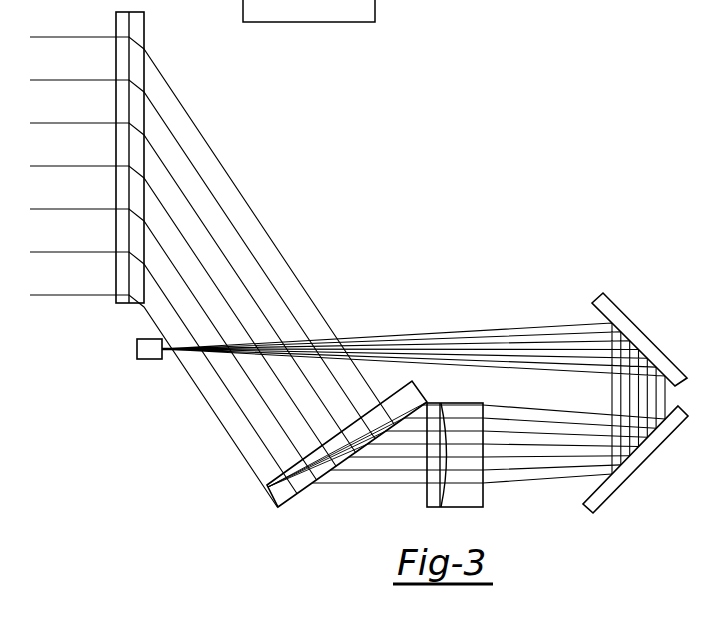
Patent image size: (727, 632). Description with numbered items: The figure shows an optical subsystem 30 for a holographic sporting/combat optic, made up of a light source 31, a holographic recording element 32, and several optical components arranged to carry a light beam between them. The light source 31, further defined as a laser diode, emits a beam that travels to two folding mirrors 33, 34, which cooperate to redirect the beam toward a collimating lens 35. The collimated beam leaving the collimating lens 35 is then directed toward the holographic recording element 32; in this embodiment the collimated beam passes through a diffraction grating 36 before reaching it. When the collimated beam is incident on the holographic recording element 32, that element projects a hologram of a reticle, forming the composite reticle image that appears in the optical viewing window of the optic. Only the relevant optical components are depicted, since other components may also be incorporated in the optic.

The optical subsystem 30 is at (452, 181).
The light source 31 is at (150, 359).
The holographic recording element 32 is at (137, 32).
The folding mirror 33 is at (641, 335).
The folding mirror 34 is at (657, 450).
The collimating lens 35 is at (468, 495).
The diffraction grating 36 is at (266, 490).